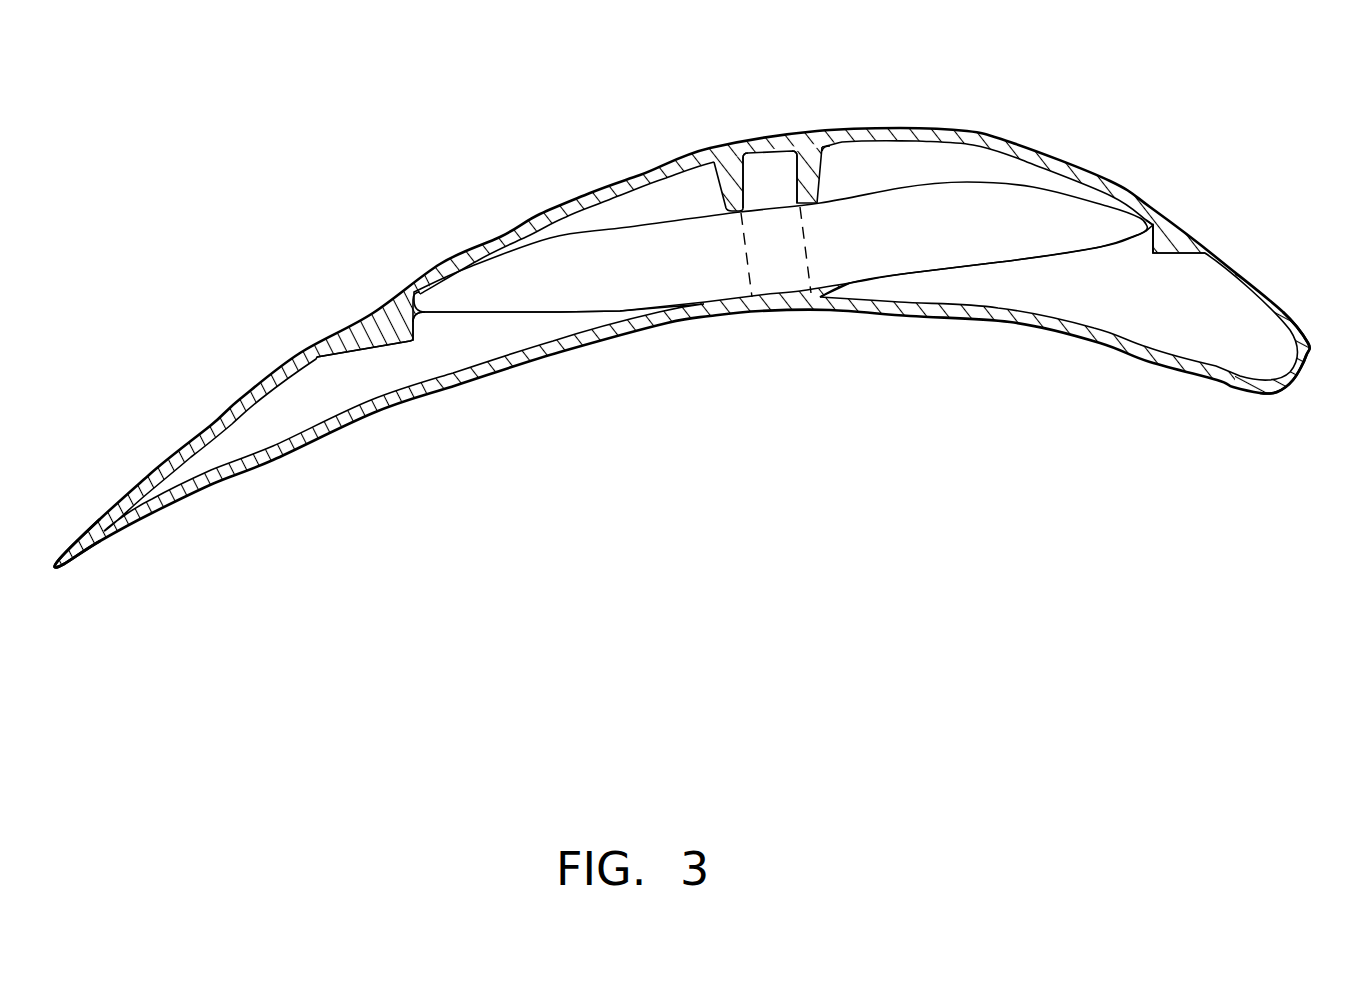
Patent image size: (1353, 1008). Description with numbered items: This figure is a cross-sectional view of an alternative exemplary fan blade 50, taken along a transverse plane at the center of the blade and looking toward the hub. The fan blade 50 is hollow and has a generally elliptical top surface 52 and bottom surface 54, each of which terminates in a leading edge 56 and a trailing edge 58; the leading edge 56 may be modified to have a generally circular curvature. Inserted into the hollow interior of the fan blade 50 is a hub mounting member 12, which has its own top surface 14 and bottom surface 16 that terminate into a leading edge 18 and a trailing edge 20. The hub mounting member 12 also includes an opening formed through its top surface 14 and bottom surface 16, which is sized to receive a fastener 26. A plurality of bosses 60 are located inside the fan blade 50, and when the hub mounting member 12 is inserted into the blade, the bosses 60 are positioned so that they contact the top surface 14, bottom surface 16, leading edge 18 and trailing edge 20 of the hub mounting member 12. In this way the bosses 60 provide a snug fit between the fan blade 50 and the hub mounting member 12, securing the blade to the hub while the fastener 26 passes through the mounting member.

The hub mounting member 12 is at (676, 286).
The top surface 14 is at (883, 192).
The bottom surface 16 is at (1013, 263).
The leading edge 18 is at (1160, 217).
The trailing edge 20 is at (400, 303).
The fastener 26 is at (765, 178).
The fan blade 50 is at (268, 178).
The top surface 52 is at (813, 132).
The bottom surface 54 is at (813, 313).
The leading edge 56 is at (1307, 367).
The trailing edge 58 is at (60, 566).
The bosses 60 is at (415, 323).